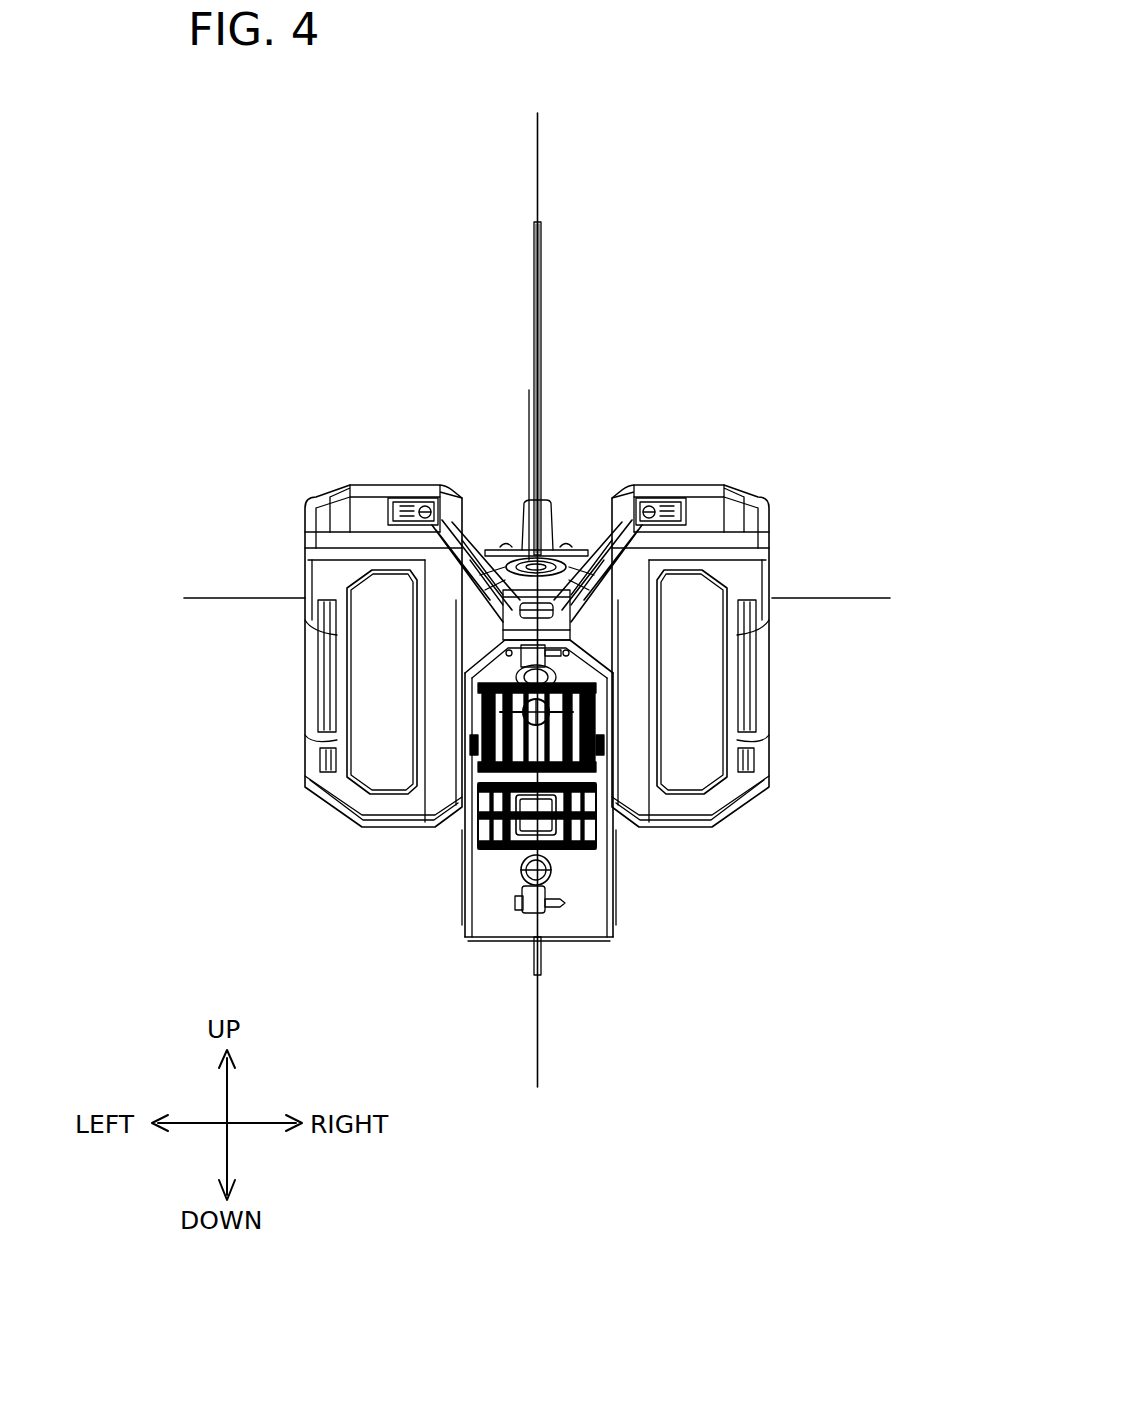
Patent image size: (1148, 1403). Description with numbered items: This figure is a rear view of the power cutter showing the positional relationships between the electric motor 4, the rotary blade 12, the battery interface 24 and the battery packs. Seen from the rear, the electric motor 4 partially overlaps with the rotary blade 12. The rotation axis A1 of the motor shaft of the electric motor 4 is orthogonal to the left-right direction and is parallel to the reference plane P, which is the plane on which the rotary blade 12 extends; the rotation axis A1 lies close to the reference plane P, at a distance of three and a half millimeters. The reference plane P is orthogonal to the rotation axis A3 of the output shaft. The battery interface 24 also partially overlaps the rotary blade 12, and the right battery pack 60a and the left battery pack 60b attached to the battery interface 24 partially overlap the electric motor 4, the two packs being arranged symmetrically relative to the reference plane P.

The reference plane P is at (539, 164).
The rotary blade 12 is at (542, 252).
The rotation axis A1 is at (528, 433).
The electric motor 4 is at (537, 715).
The left battery pack 60b is at (305, 497).
The right battery pack 60a is at (765, 497).
The rotation axis A3 is at (864, 598).
The battery interface 24 is at (590, 940).